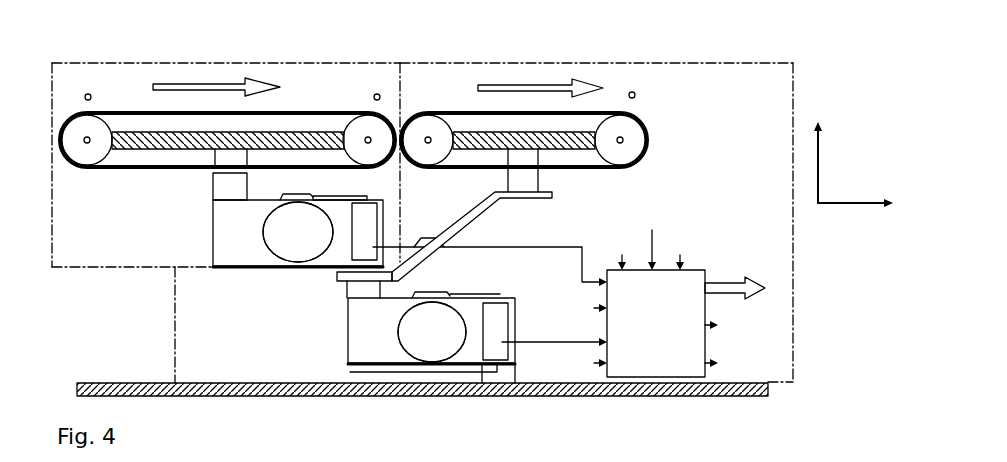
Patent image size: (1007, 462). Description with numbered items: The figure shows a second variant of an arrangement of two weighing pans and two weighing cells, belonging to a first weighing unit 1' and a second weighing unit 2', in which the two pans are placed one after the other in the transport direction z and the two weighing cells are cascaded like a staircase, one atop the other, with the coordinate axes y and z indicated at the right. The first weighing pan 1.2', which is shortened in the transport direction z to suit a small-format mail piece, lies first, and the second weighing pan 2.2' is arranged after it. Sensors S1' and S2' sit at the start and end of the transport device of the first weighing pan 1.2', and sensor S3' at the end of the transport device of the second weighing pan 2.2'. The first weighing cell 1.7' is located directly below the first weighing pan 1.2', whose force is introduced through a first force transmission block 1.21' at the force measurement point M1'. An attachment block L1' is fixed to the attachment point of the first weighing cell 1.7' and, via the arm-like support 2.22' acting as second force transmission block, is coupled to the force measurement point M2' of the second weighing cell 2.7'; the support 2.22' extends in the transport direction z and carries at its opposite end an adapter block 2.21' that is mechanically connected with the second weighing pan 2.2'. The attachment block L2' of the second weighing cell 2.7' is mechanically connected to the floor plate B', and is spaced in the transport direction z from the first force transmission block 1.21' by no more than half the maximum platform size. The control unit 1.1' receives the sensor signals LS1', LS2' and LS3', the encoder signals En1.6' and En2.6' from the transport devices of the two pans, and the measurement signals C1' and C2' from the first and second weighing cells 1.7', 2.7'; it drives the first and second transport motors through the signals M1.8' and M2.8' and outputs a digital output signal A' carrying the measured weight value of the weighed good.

The first weighing unit 1' is at (226, 207).
The second weighing unit 2' is at (596, 206).
The first sensor S1' is at (75, 87).
The second sensor S2' is at (361, 87).
The third sensor S3' is at (652, 83).
The first weighing pan 1.2' is at (222, 175).
The first force transmission block 1.21' is at (337, 183).
The force measurement point of the first weighing cell M1' is at (262, 230).
The first weighing cell 1.7' is at (216, 234).
The attachment block of the first weighing cell L1' is at (290, 285).
The second weighing pan 2.2' is at (569, 162).
The adapter block 2.21' is at (569, 183).
The support 2.22' is at (472, 236).
The control unit 1.1' is at (689, 286).
The signal of the first sensor LS1' is at (623, 253).
The signal of the second sensor LS2' is at (660, 240).
The signal of the third sensor LS3' is at (691, 253).
The measurement signal of the first weighing cell C1' is at (490, 269).
The encoder signal of the first transport device En1.6' is at (570, 306).
The measurement signal of the second weighing cell C2' is at (554, 333).
The encoder signal of the second transport device En2.6' is at (570, 361).
The digital output signal A' is at (747, 286).
The first motor signal M1.8' is at (747, 326).
The second motor signal M2.8' is at (747, 362).
The force measurement point of the second weighing cell M2' is at (381, 328).
The second weighing cell 2.7' is at (325, 332).
The attachment block of the second weighing cell L2' is at (381, 368).
The floor plate B' is at (422, 374).
The y direction y is at (814, 151).
The transport direction z is at (865, 204).